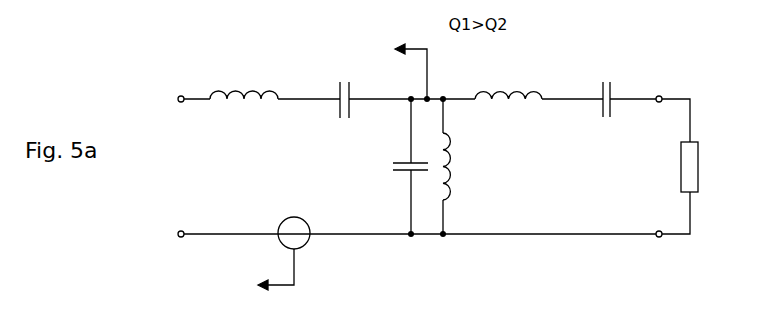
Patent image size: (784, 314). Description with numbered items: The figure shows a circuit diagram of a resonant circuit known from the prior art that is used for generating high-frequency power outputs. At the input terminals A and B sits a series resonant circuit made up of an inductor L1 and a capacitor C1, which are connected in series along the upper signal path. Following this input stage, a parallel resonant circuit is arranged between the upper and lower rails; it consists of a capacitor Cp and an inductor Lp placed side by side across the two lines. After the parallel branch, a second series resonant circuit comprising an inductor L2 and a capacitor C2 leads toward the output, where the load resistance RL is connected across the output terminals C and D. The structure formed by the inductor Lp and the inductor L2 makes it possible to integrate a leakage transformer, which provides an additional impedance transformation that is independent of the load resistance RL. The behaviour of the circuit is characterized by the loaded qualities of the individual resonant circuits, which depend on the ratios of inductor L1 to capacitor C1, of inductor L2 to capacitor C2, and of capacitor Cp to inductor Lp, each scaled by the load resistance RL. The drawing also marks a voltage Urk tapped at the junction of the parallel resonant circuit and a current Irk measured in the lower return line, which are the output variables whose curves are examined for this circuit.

The input terminal A is at (175, 82).
The input terminal B is at (182, 254).
The output terminal C is at (660, 78).
The output terminal D is at (659, 255).
The inductor L1 is at (244, 84).
The capacitor C1 is at (344, 90).
The capacitor Cp is at (397, 170).
The inductor Lp is at (459, 166).
The inductor L2 is at (508, 81).
The capacitor C2 is at (607, 90).
The load resistance RL is at (703, 167).
The resonant circuit voltage Urk is at (393, 70).
The resonant circuit current Irk (current probe) Irk is at (270, 256).